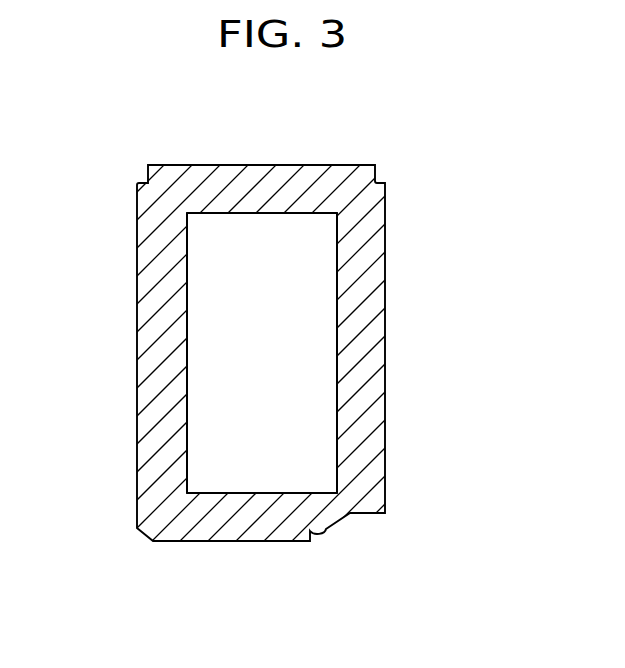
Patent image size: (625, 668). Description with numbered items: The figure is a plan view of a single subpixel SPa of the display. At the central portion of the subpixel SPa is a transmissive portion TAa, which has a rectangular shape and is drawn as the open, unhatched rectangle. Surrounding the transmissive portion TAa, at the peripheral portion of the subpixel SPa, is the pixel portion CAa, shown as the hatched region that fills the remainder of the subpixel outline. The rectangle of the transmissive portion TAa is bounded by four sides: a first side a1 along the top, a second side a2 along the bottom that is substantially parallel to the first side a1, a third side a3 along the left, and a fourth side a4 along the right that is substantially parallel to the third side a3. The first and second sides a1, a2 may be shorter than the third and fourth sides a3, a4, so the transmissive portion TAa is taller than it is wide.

The subpixel SPa is at (137, 156).
The transmissive portion TAa is at (210, 333).
The pixel portion CAa is at (160, 385).
The first side a1 is at (270, 213).
The second side a2 is at (242, 493).
The third side a3 is at (186, 427).
The fourth side a4 is at (337, 338).